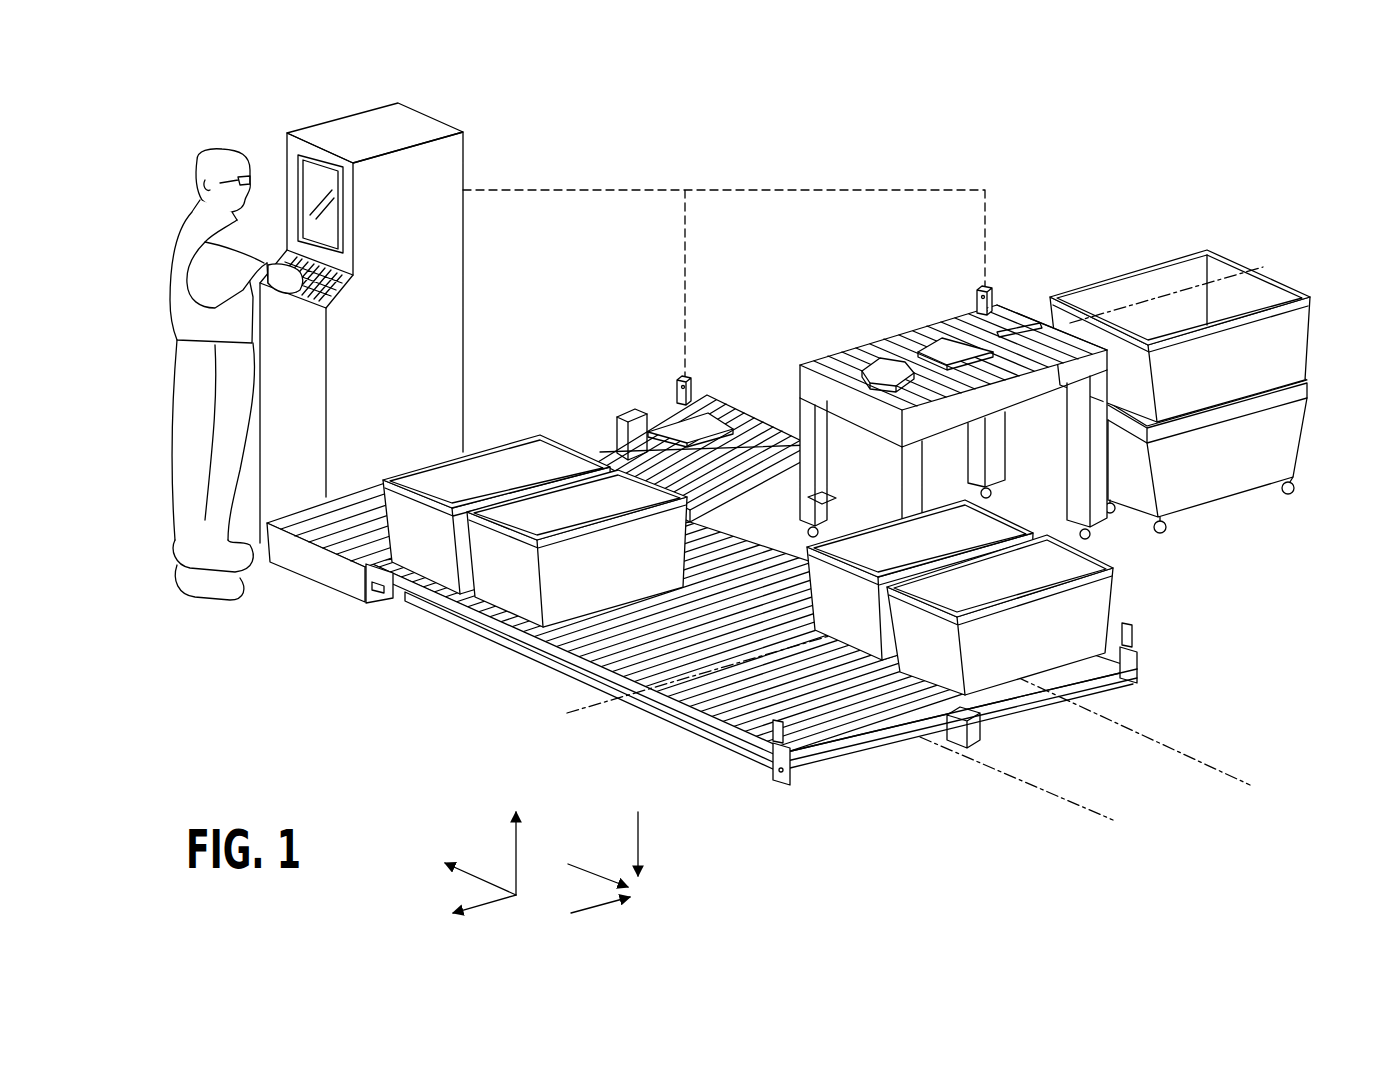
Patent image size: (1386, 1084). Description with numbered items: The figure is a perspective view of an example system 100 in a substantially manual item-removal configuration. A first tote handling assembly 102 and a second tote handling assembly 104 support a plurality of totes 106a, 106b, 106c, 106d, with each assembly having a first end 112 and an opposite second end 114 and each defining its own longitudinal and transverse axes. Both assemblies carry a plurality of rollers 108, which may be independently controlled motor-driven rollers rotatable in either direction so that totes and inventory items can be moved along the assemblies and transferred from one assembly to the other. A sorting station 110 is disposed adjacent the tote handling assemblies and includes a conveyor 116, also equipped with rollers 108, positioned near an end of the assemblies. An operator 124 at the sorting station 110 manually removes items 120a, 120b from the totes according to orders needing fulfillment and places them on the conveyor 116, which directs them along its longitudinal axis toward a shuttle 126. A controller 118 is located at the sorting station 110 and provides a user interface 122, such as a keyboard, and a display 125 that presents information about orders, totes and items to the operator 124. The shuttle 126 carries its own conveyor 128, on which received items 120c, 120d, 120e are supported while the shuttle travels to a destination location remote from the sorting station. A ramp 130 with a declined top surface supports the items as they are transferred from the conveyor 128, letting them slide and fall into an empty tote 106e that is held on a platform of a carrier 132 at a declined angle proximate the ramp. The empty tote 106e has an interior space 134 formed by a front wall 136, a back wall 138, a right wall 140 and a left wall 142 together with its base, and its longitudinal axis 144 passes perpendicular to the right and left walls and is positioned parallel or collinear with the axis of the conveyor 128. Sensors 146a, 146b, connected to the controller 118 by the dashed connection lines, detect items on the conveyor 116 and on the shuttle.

The system 100 is at (730, 502).
The first tote handling assembly 102 is at (1082, 705).
The second tote handling assembly 104 is at (908, 748).
The tote 106a is at (988, 531).
The tote 106b is at (1068, 567).
The tote 106c is at (510, 585).
The tote 106d is at (427, 556).
The empty tote 106e is at (1233, 278).
The rollers 108 is at (945, 347).
The sorting station 110 is at (313, 594).
The first end 112 is at (813, 760).
The second end 114 is at (389, 603).
The conveyor 116 is at (664, 381).
The controller 118 is at (402, 308).
The item 120a is at (597, 423).
The item 120b is at (707, 427).
The item 120c is at (883, 367).
The item 120d is at (945, 338).
The item 120e is at (1034, 300).
The user interface 122 is at (343, 292).
The operator 124 is at (212, 603).
The display 125 is at (305, 172).
The shuttle 126 is at (950, 335).
The conveyor 128 is at (835, 360).
The ramp 130 is at (1048, 300).
The carrier 132 is at (1264, 440).
The interior space 134 is at (1143, 296).
The front wall 136 is at (1270, 352).
The back wall 138 is at (1098, 272).
The right wall 140 is at (1313, 318).
The left wall 142 is at (1118, 382).
The longitudinal axis 144 is at (1236, 281).
The sensor 146a is at (678, 392).
The sensor 146b is at (980, 290).